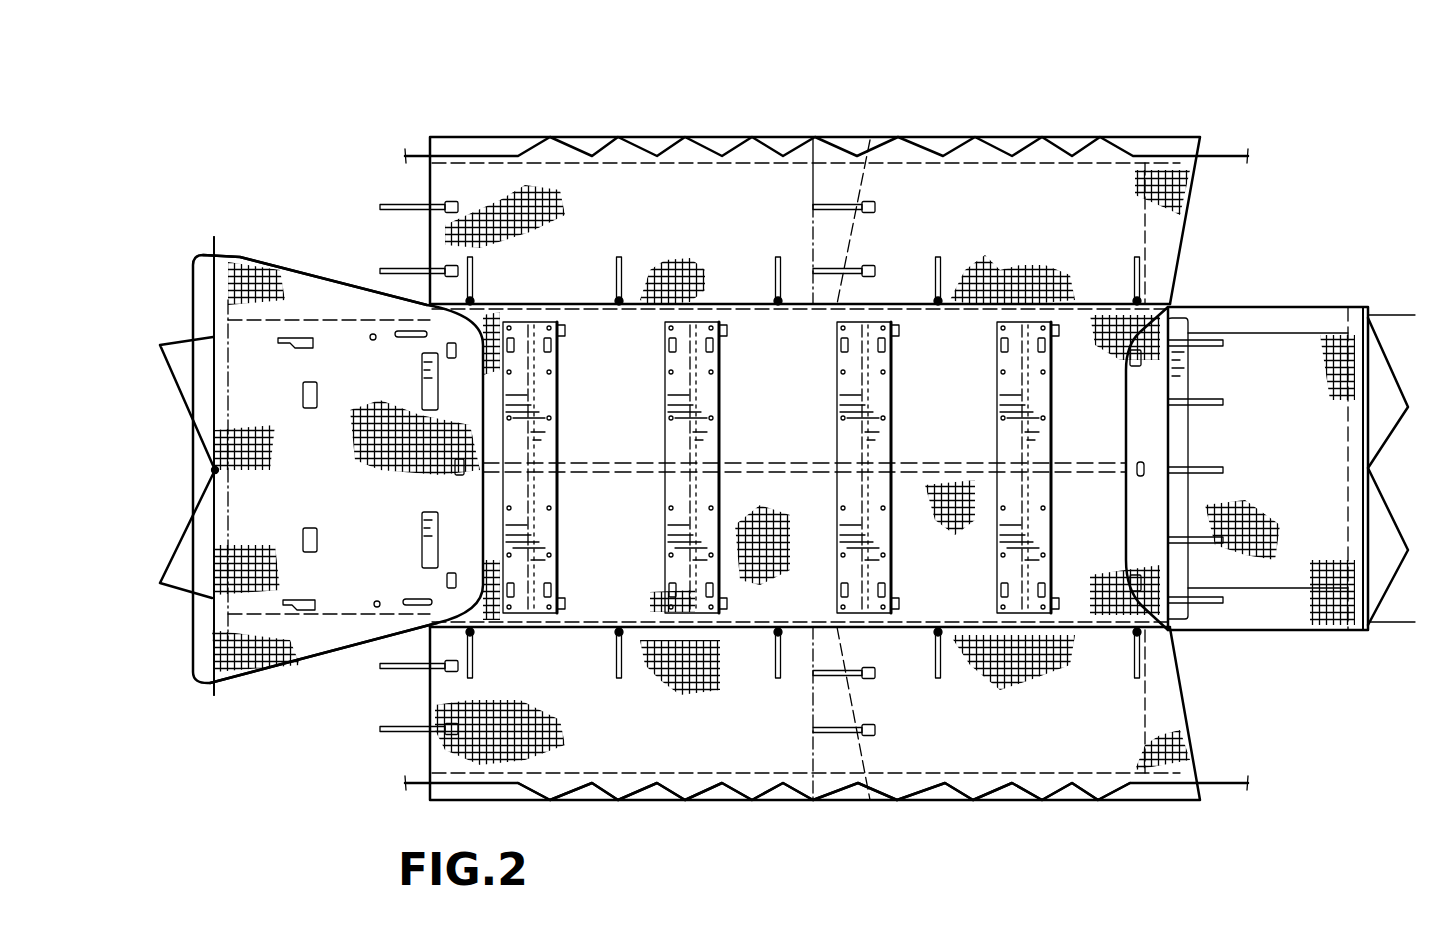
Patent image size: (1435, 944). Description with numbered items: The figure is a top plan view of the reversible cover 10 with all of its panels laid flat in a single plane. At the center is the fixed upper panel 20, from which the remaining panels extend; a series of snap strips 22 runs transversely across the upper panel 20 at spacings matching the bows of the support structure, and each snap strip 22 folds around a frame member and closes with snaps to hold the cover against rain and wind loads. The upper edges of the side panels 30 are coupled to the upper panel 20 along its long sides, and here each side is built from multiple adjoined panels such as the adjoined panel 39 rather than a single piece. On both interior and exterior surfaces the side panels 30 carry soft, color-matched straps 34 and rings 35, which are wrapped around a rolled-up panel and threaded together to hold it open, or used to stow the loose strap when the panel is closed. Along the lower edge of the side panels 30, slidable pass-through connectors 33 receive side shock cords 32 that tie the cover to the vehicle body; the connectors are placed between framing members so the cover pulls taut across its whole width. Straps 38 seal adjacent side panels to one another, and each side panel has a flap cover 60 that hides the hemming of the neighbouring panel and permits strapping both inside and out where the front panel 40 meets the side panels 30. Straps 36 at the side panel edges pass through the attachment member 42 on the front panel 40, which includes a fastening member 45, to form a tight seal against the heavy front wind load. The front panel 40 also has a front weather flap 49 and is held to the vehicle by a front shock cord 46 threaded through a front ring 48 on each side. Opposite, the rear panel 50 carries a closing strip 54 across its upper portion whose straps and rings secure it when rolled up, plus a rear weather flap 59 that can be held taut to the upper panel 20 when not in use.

The reversible cover 10 is at (872, 105).
The upper panel 20 is at (810, 455).
The snap strips 22 is at (542, 368).
The side panels 30 is at (808, 190).
The side shock cords 32 is at (672, 798).
The slidable pass-through connectors 33 is at (595, 775).
The straps 34 is at (622, 258).
The rings 35 is at (627, 303).
The straps 36 is at (397, 207).
The straps 38 is at (845, 207).
The adjoined panel 39 is at (567, 255).
The front panel 40 is at (344, 495).
The attachment member 42 is at (308, 345).
The fastening member 45 is at (303, 396).
The front shock cord 46 is at (175, 378).
The front ring 48 is at (213, 470).
The front weather flap 49 is at (455, 530).
The rear panel 50 is at (1315, 490).
The closing strip 54 is at (1183, 376).
The rear weather flap 59 is at (1148, 480).
The flap cover 60 is at (287, 270).